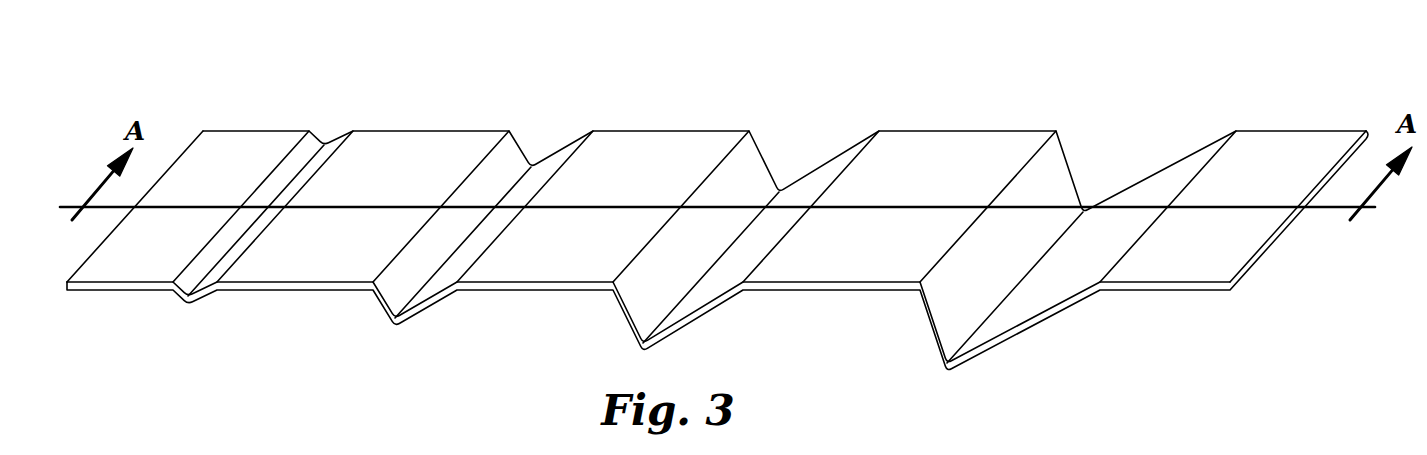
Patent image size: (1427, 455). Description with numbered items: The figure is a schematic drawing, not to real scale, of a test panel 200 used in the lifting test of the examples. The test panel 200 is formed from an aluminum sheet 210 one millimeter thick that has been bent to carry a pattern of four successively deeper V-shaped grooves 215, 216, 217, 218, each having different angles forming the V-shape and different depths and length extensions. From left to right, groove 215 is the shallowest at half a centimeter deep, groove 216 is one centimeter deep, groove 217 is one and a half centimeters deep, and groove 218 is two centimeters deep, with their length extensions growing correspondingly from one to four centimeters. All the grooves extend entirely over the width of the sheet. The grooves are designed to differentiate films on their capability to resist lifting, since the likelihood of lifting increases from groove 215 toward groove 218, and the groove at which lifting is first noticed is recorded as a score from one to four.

The test panel 200 is at (145, 80).
The aluminum sheet 210 is at (250, 140).
The groove 215 is at (335, 118).
The groove 216 is at (555, 116).
The groove 217 is at (810, 118).
The groove 218 is at (1140, 118).